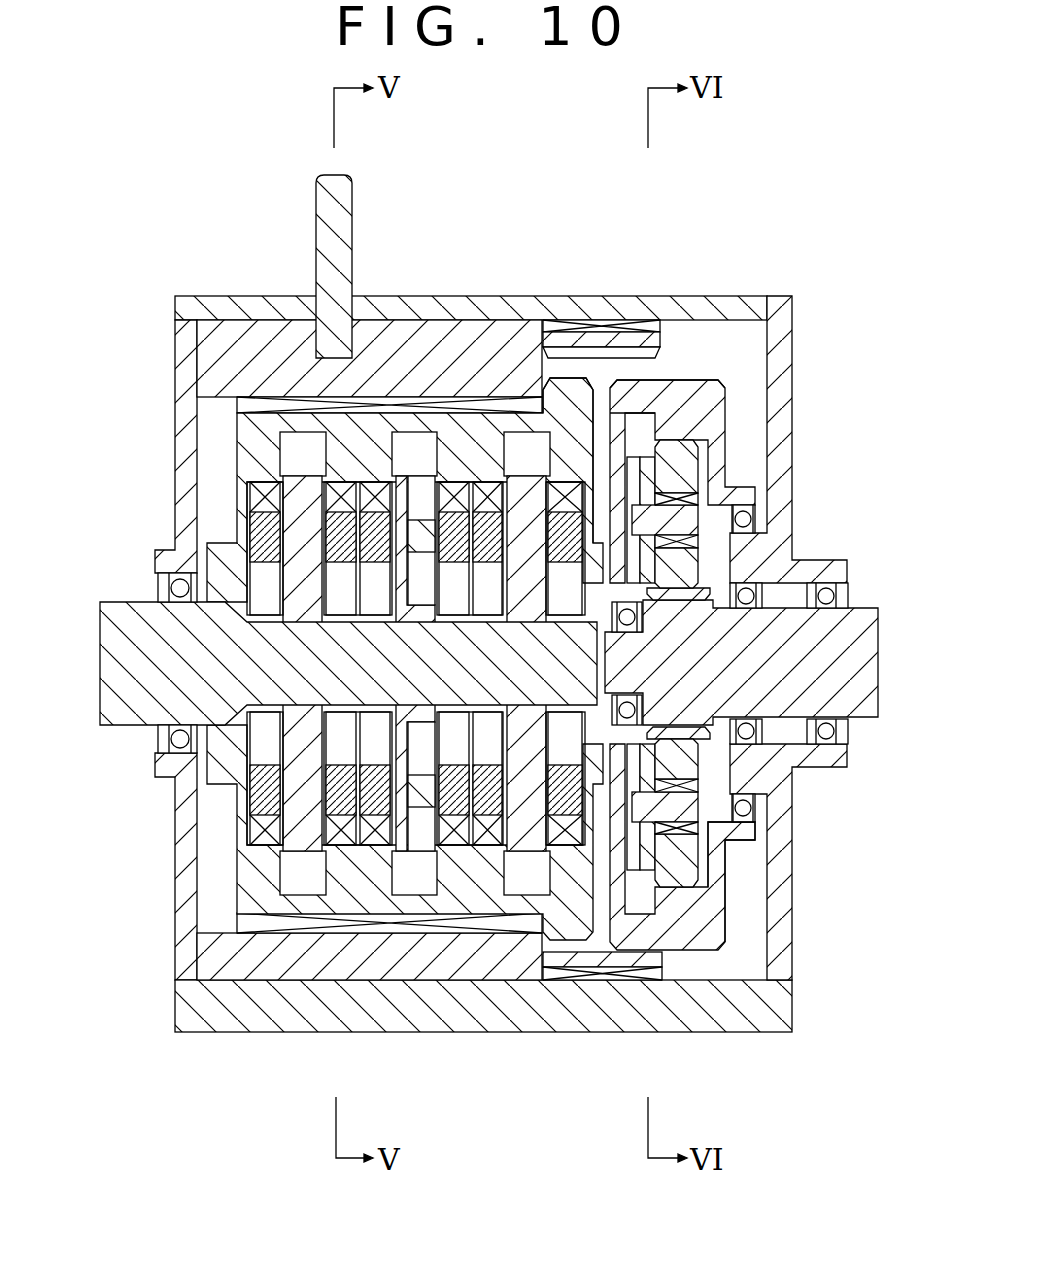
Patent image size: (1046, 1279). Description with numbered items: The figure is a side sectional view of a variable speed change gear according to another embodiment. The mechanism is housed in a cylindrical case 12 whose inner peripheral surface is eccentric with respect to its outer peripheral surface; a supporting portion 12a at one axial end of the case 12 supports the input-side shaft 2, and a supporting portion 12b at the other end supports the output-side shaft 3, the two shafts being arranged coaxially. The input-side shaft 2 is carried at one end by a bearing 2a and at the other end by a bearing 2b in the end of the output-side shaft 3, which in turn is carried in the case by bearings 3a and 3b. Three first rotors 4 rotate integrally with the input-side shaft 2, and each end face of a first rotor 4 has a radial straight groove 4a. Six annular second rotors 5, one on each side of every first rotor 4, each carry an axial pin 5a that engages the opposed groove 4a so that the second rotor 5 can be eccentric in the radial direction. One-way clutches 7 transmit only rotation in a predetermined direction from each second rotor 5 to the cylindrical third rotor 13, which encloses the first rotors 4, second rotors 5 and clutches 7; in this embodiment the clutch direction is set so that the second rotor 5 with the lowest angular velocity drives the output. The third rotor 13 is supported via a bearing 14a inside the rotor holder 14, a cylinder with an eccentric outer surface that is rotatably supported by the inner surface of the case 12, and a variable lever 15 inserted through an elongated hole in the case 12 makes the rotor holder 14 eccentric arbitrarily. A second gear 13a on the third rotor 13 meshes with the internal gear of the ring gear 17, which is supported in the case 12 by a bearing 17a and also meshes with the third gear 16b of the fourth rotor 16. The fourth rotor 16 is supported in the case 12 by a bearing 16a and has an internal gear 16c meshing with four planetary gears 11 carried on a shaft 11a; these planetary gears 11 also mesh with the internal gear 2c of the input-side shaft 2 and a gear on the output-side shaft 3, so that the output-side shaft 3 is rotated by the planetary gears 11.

The input-side shaft 2 is at (118, 655).
The bearing 2a is at (178, 748).
The bearing 2b is at (688, 900).
The internal gear 2c is at (760, 548).
The output-side shaft 3 is at (858, 640).
The bearing 3a is at (830, 767).
The bearing 3b is at (830, 745).
The first rotor 4 is at (300, 960).
The straight groove 4a is at (422, 537).
The second rotor 5 is at (430, 487).
The pin 5a is at (376, 505).
The one-way clutch 7 is at (258, 495).
The planetary gear 11 is at (686, 478).
The shaft 11a is at (688, 885).
The case 12 is at (762, 297).
The supporting portion 12a is at (150, 580).
The supporting portion 12b is at (782, 590).
The third rotor 13 is at (245, 448).
The second gear 13a is at (590, 380).
The rotor holder 14 is at (222, 347).
The bearing 14a is at (268, 405).
The variable lever 15 is at (317, 212).
The fourth rotor 16 is at (722, 403).
The bearing 16a is at (700, 867).
The third gear 16b is at (693, 383).
The internal gear 16c is at (757, 1000).
The ring gear 17 is at (617, 345).
The bearing 17a is at (580, 978).